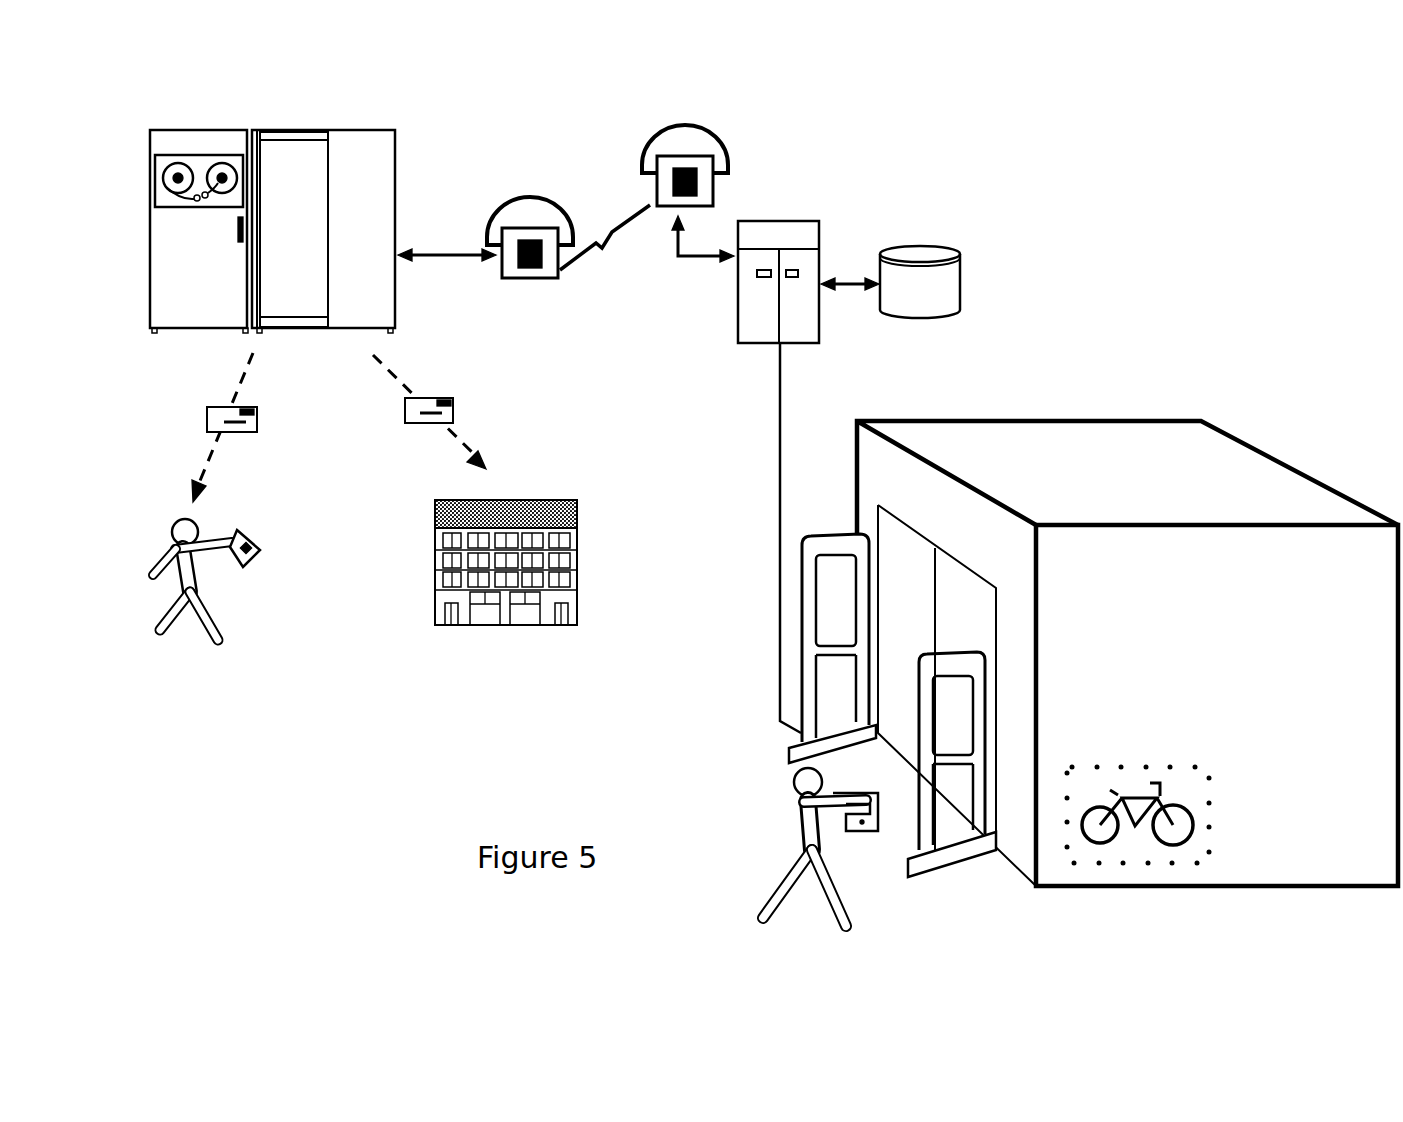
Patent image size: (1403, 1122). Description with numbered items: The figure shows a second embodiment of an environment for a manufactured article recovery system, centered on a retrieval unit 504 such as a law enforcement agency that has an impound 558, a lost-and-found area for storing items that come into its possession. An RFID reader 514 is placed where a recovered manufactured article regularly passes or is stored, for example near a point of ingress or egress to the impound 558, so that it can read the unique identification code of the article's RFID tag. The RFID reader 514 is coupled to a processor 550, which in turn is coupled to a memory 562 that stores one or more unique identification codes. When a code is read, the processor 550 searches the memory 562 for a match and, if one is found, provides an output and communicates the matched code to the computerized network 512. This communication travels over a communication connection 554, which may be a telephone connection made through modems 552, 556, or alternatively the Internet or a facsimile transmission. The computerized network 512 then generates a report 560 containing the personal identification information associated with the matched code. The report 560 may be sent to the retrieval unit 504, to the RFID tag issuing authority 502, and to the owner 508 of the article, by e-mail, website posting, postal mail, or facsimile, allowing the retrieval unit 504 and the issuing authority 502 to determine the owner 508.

The computerized network 512 is at (150, 152).
The modem 556 is at (515, 205).
The modem 552 is at (698, 132).
The communication connection 554 is at (623, 230).
The processor 550 is at (812, 202).
The retrieval unit 504 is at (887, 180).
The memory 562 is at (987, 242).
The impound 558 is at (1120, 419).
The RFID reader 514 is at (810, 534).
The report 560 is at (284, 400).
The owner 508 is at (152, 567).
The RFID tag issuing authority 502 is at (620, 497).